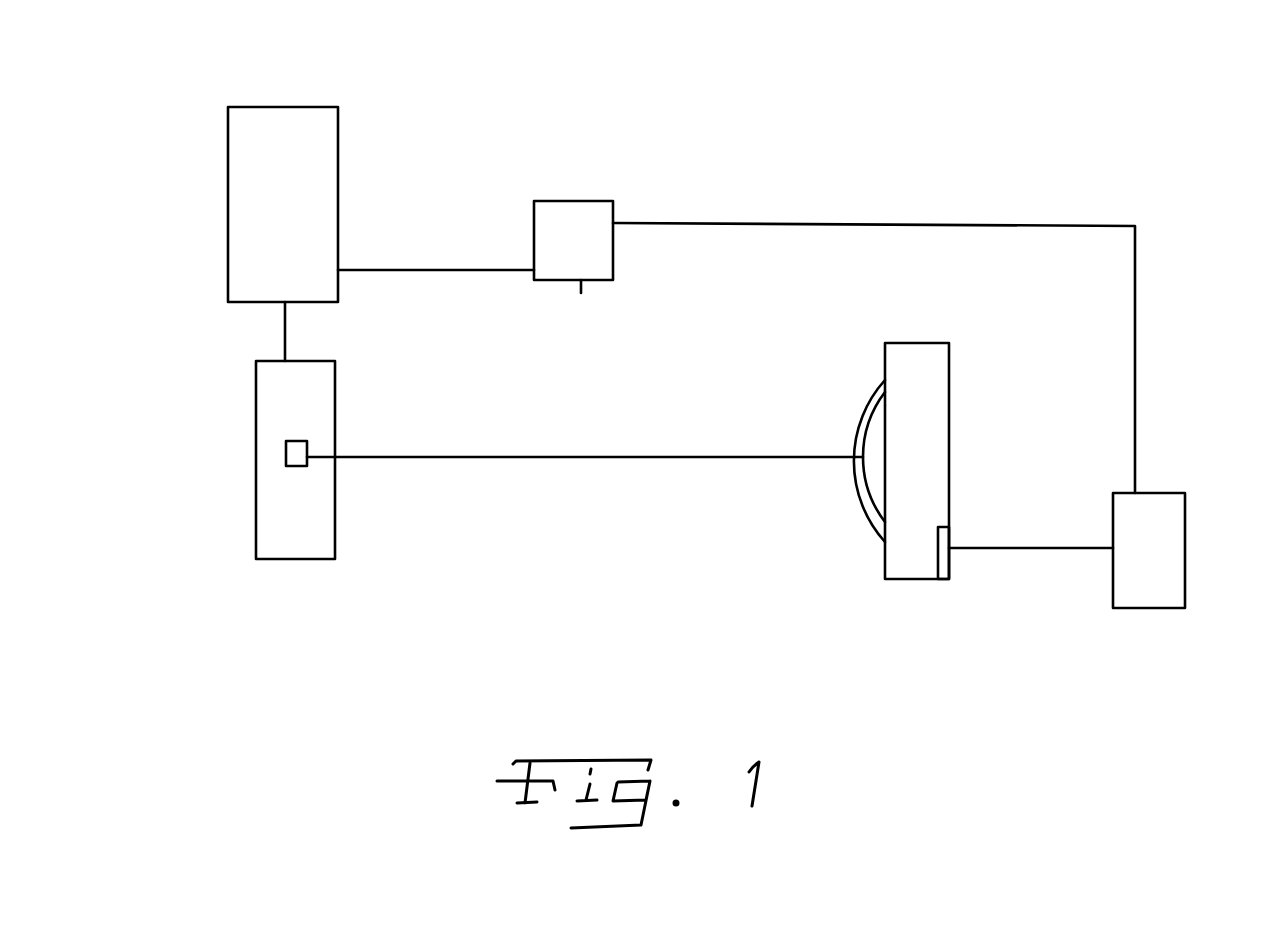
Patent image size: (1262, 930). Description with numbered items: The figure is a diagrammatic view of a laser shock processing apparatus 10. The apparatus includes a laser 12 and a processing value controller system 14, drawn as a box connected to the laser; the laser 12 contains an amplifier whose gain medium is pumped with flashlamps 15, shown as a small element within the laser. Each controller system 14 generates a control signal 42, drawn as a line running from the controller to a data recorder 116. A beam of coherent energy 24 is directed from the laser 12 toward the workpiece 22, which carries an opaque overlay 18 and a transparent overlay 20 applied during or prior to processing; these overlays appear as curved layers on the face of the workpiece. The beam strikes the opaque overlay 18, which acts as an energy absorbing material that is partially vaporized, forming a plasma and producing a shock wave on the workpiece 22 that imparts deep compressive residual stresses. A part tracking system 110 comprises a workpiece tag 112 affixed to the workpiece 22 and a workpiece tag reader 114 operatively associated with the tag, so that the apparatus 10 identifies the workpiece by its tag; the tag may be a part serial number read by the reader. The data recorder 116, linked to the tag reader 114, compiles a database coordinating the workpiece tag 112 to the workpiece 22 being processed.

The laser shock processing apparatus 10 is at (480, 592).
The laser 12 is at (335, 559).
The processing value controller system 14 is at (324, 107).
The flashlamps 15 is at (287, 453).
The opaque overlay 18 is at (878, 425).
The transparent overlay 20 is at (873, 521).
The workpiece 22 is at (942, 343).
The beam of coherent energy 24 is at (640, 459).
The control signal 42 is at (413, 270).
The part tracking system 110 is at (1150, 431).
The workpiece tag 112 is at (945, 579).
The workpiece tag reader 114 is at (1178, 493).
The data recorder 116 is at (592, 201).